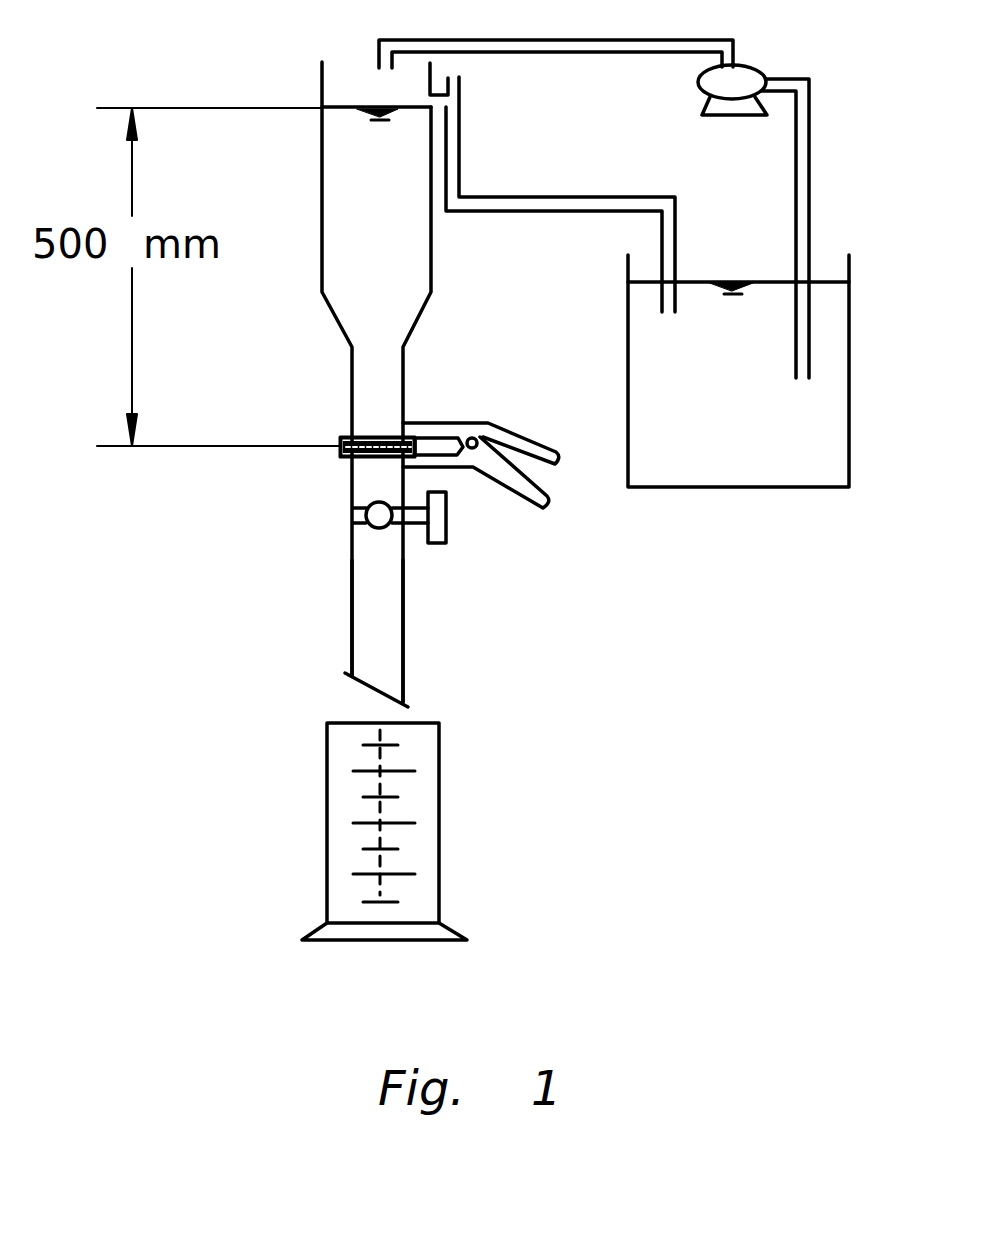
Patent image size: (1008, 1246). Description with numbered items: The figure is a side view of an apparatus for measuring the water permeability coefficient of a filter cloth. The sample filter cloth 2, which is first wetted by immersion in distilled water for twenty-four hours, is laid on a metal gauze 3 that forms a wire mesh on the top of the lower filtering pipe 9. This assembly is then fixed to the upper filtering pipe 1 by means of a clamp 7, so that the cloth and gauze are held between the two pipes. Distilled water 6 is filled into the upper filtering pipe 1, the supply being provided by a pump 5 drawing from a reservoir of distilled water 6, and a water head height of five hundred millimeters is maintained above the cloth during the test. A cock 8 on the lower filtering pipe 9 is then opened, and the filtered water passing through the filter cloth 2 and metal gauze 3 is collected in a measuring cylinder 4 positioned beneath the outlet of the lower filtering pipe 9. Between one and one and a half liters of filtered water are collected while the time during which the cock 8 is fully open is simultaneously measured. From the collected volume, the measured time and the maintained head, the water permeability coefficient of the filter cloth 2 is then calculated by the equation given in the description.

The upper filtering pipe 1 is at (322, 173).
The filter cloth 2 is at (340, 445).
The metal gauze 3 is at (340, 448).
The measuring cylinder 4 is at (327, 768).
The pump 5 is at (760, 72).
The distilled water 6 is at (817, 408).
The clamp 7 is at (453, 422).
The cock 8 is at (446, 515).
The lower filtering pipe 9 is at (403, 605).